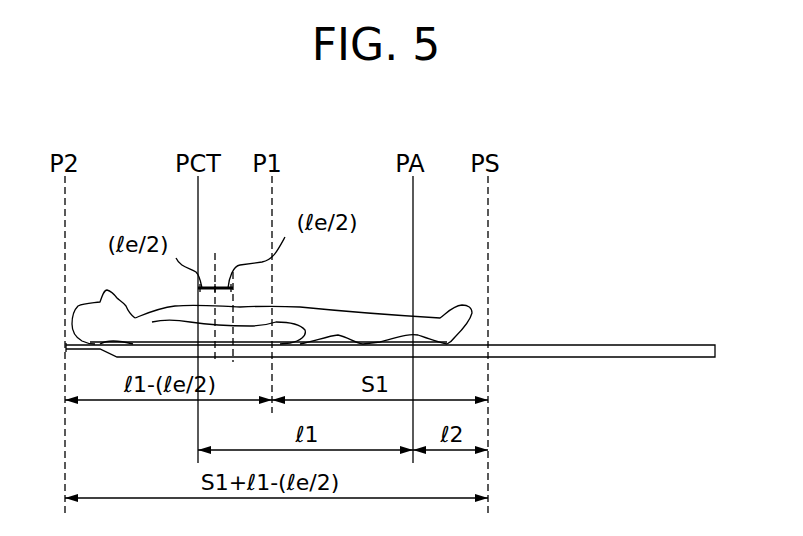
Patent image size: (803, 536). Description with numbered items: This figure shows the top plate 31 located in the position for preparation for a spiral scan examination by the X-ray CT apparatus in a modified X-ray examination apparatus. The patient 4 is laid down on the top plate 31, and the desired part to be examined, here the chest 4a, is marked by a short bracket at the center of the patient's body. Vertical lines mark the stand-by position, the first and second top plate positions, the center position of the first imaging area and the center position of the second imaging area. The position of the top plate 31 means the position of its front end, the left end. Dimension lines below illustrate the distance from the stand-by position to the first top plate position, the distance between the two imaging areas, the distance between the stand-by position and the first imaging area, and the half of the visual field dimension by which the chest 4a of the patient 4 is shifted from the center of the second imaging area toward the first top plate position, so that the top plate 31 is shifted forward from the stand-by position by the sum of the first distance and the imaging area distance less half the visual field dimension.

The patient 4 is at (341, 309).
The chest 4a is at (219, 292).
The top plate 31 is at (656, 345).